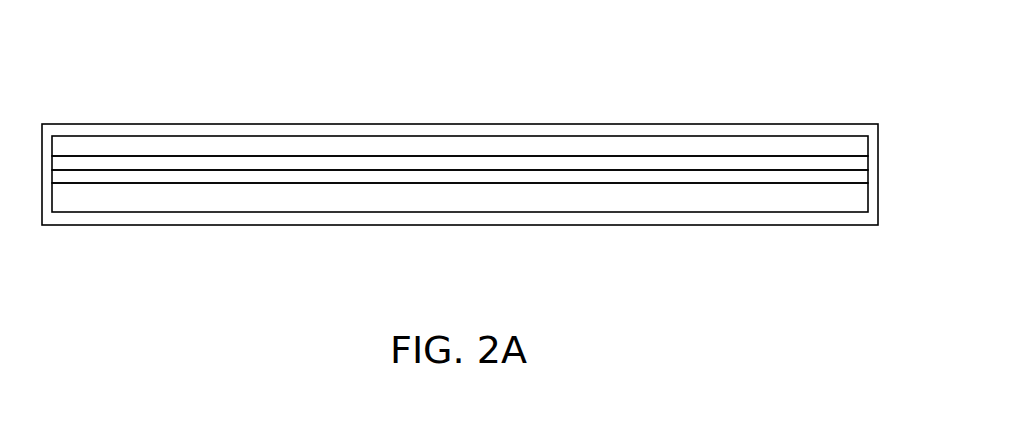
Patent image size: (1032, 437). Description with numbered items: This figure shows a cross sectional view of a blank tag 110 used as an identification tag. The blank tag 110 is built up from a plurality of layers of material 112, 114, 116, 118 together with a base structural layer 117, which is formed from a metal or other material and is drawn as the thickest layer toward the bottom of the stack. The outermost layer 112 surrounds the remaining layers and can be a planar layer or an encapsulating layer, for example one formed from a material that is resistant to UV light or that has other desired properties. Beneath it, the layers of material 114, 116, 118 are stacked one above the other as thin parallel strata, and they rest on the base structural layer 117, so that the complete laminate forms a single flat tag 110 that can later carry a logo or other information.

The blank tag 110 is at (783, 40).
The outermost layer 112 is at (255, 125).
The layer of material 114 is at (356, 148).
The layer of material 116 is at (582, 155).
The base structural layer 117 is at (511, 195).
The layer of material 118 is at (656, 183).